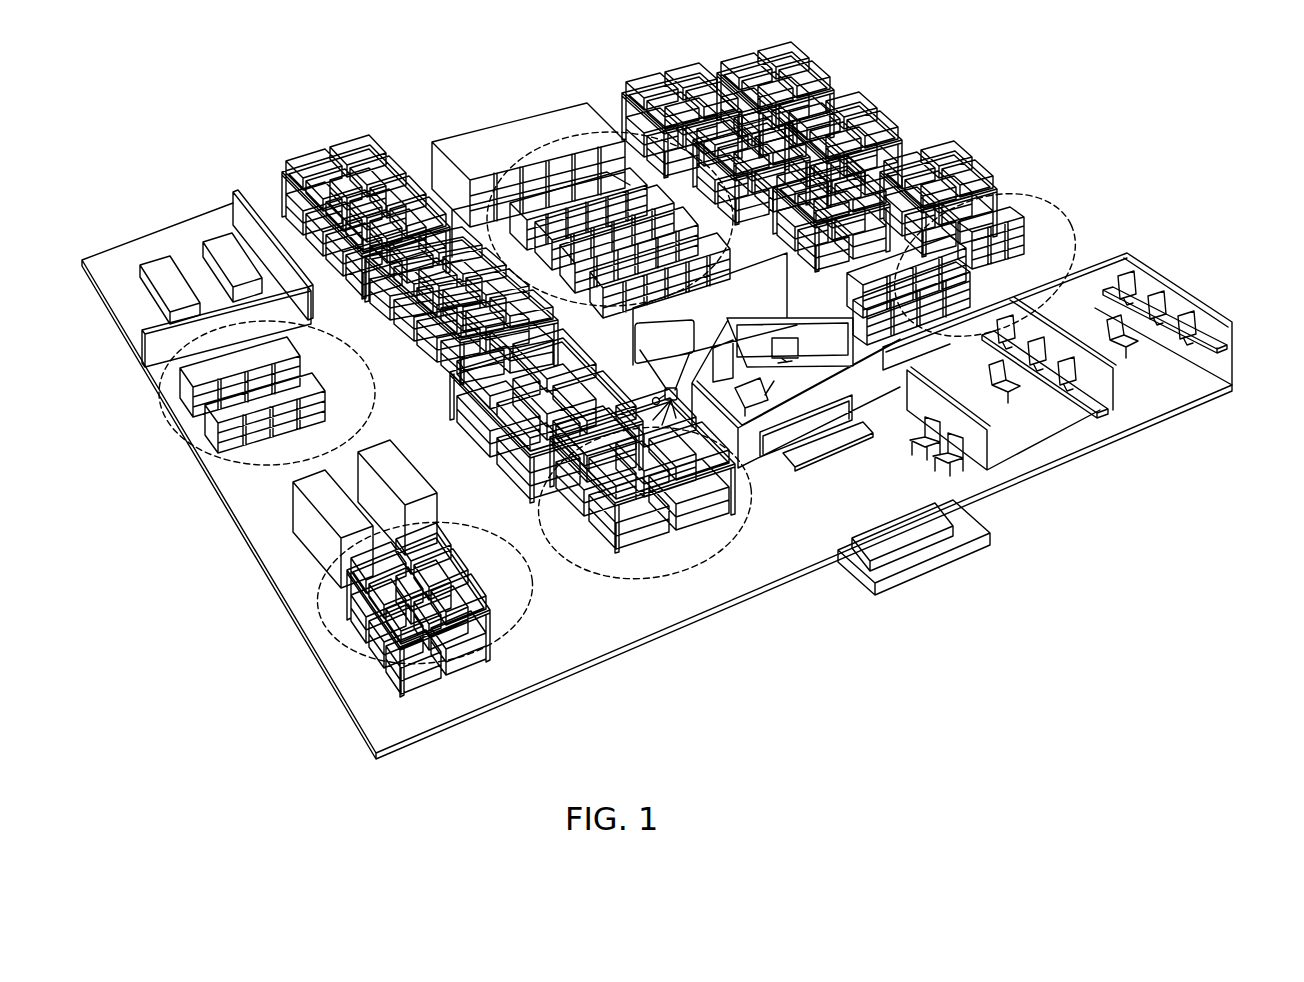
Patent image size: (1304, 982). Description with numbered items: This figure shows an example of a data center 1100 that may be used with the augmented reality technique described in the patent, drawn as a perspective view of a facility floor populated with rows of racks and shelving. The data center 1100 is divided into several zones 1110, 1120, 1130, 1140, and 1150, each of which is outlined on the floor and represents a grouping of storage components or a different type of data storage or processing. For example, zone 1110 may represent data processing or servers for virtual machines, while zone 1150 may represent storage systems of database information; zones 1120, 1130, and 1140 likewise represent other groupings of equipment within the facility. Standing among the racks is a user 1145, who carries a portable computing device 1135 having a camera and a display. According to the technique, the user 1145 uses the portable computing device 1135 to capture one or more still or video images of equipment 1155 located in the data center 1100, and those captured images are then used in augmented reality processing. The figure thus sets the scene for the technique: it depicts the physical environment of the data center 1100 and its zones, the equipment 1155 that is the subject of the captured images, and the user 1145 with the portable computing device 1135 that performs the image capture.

The data center 1100 is at (206, 228).
The zone 1110 is at (563, 133).
The zone 1120 is at (237, 466).
The zone 1130 is at (352, 648).
The portable computing device 1135 is at (680, 397).
The zone 1140 is at (1040, 215).
The user 1145 is at (650, 402).
The zone 1150 is at (656, 578).
The equipment 1155 is at (793, 307).